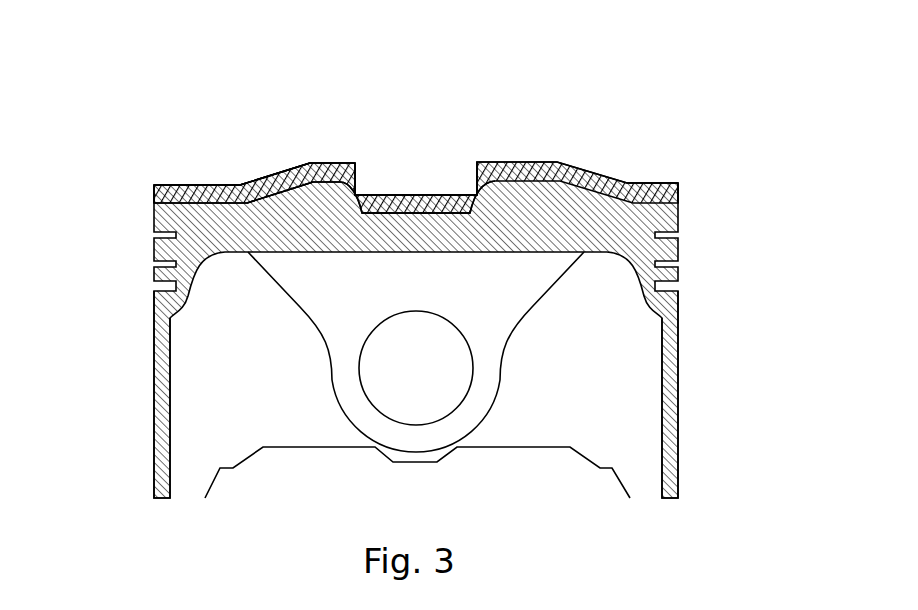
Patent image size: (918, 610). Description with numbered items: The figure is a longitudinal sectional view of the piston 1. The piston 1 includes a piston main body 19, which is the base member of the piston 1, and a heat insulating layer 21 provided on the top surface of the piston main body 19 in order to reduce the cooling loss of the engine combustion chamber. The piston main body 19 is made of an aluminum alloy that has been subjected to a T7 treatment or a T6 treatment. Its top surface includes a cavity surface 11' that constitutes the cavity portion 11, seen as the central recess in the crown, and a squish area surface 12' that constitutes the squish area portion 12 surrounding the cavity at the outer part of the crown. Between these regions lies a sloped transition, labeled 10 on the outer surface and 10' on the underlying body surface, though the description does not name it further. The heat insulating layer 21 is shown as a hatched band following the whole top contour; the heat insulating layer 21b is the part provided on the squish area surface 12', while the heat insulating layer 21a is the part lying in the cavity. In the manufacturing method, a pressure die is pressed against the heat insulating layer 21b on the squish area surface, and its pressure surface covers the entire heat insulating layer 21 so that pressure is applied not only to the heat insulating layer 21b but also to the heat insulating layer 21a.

The piston 1 is at (639, 64).
The inclined surface of crown top 10 is at (275, 152).
The inclined surface portion of base under film 10' is at (270, 247).
The cavity portion 11 is at (416, 165).
The cavity surface 11' is at (416, 255).
The squish area portion 12 is at (421, 157).
The squish area surface 12' is at (421, 210).
The piston main body 19 is at (678, 405).
The heat insulating layer 21 is at (423, 75).
The heat insulating layer 21a is at (383, 195).
The heat insulating layer 21b is at (210, 185).